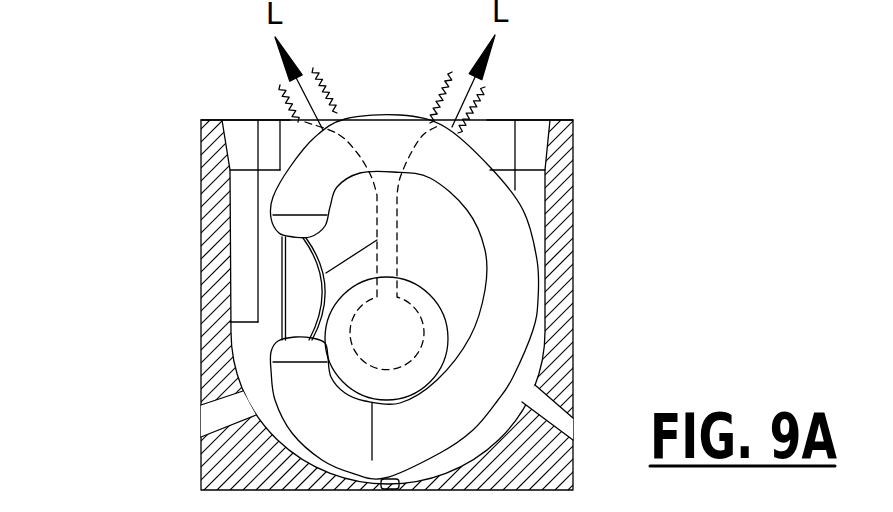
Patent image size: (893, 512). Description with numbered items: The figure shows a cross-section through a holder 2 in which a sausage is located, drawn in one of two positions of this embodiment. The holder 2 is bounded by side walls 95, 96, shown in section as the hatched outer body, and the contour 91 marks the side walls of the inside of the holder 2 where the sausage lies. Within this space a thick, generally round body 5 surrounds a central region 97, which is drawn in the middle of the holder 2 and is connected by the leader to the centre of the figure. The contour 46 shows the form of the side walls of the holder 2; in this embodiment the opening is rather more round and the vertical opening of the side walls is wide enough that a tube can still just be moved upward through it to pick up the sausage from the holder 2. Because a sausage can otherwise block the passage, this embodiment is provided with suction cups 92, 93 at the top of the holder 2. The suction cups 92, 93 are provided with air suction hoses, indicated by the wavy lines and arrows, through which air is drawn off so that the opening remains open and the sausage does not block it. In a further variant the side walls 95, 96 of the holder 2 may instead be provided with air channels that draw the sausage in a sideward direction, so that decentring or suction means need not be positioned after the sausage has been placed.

The holder 2 is at (150, 419).
The reflector body 5 is at (502, 350).
The contour 46 is at (320, 274).
The contour 91 is at (202, 367).
The suction cup 92 is at (292, 110).
The suction cup 93 is at (432, 85).
The side wall 95 is at (200, 163).
The side wall 96 is at (573, 120).
The lamp 97 is at (393, 345).